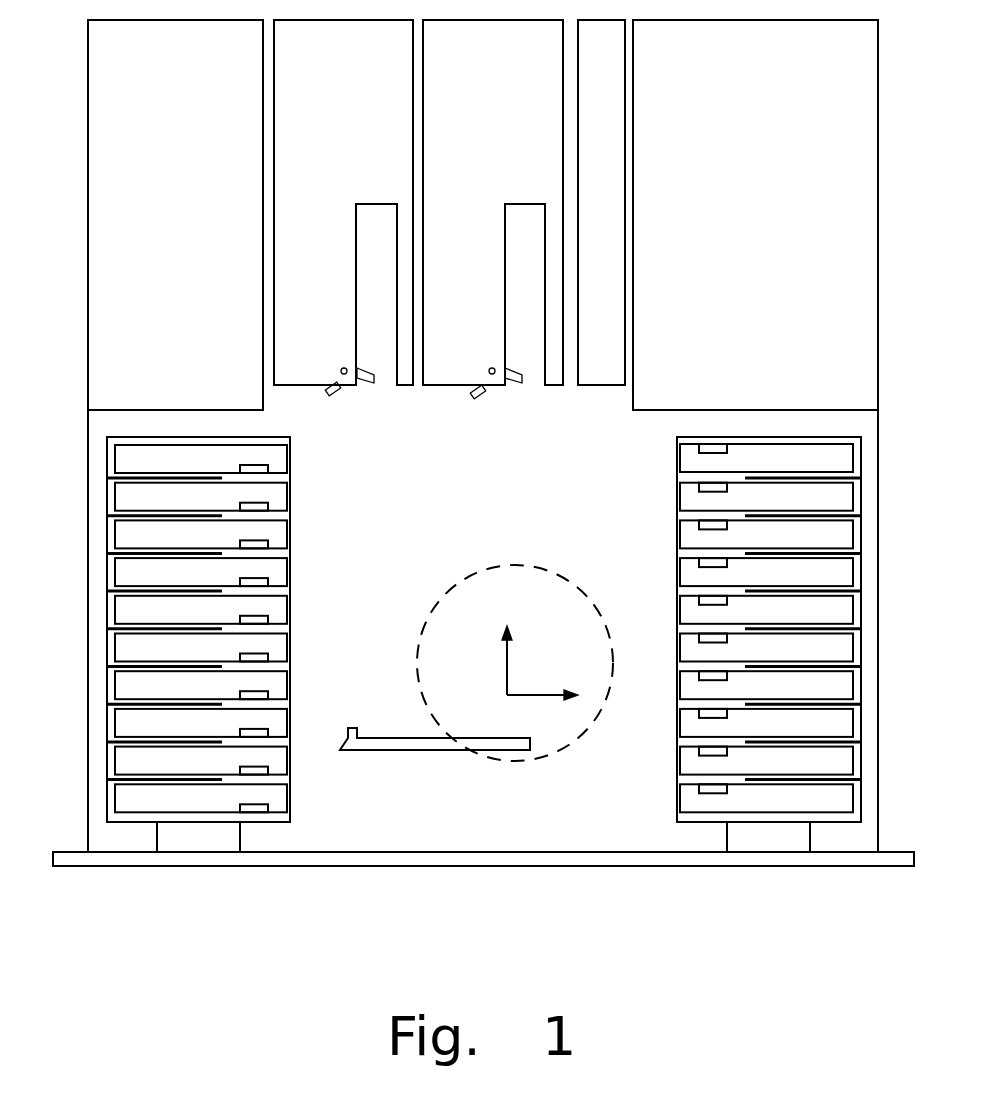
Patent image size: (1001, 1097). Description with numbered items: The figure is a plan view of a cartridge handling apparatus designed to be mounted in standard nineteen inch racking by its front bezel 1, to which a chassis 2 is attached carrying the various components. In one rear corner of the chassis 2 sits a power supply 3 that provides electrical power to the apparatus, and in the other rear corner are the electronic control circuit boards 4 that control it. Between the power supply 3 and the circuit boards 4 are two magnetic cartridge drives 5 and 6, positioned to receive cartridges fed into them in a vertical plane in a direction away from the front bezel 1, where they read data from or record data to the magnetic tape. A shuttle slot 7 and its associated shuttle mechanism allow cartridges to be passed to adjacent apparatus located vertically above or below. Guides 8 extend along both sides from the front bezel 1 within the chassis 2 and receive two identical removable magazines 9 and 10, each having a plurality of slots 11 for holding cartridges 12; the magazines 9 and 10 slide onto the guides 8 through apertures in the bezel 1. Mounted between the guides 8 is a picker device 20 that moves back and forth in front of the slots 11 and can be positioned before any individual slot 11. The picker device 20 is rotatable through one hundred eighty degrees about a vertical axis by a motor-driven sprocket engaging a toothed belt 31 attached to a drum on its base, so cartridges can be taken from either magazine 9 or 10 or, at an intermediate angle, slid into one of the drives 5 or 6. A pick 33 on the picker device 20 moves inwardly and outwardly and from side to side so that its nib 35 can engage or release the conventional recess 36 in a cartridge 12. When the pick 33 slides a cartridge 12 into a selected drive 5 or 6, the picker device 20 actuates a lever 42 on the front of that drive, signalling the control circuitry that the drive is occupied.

The front bezel 1 is at (472, 870).
The chassis 2 is at (879, 625).
The power supply 3 is at (768, 253).
The electronic control circuit boards 4 is at (181, 243).
The magnetic cartridge drive 5 is at (358, 146).
The magnetic cartridge drive 6 is at (489, 146).
The shuttle slot 7 is at (598, 363).
The guides 8 is at (200, 835).
The magazine 9 is at (290, 760).
The magazine 10 is at (678, 745).
The slots 11 is at (516, 623).
The cartridges 12 is at (484, 623).
The picker device 20 is at (500, 578).
The toothed belt 31 is at (252, 616).
The pick 33 is at (433, 741).
The nib 35 is at (353, 727).
The recess 36 is at (713, 680).
The lever 42 is at (337, 396).